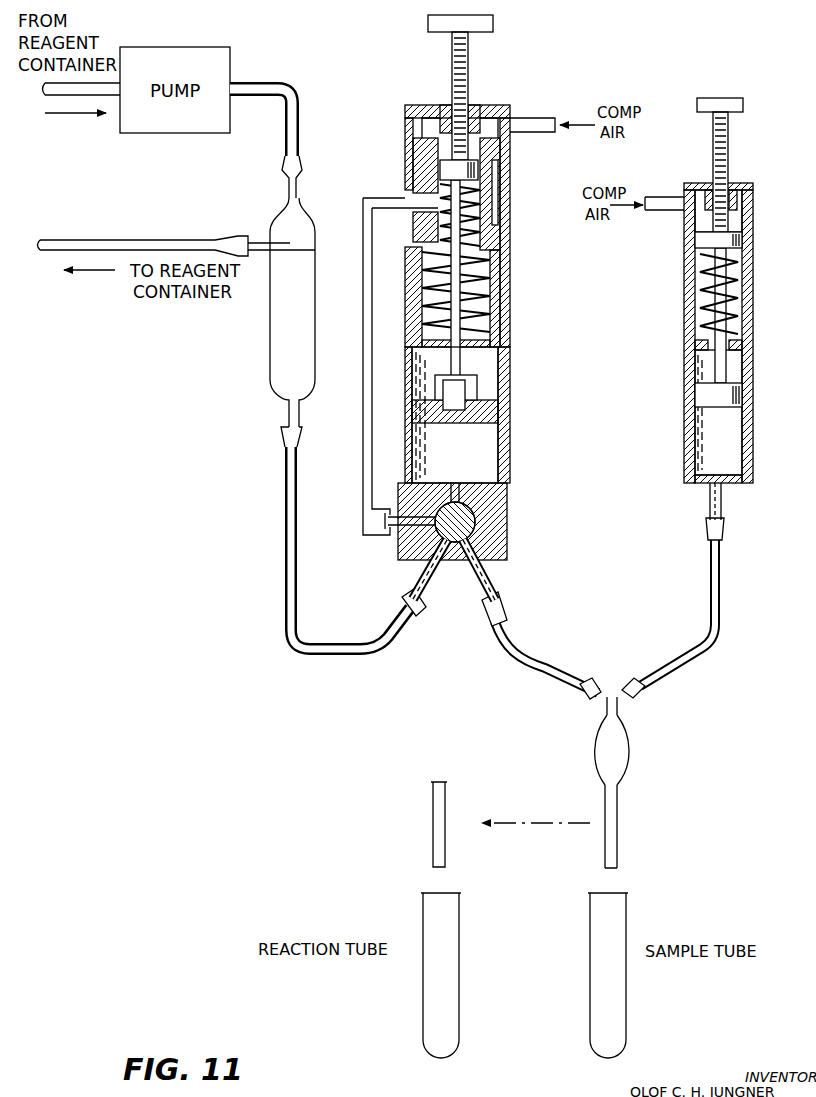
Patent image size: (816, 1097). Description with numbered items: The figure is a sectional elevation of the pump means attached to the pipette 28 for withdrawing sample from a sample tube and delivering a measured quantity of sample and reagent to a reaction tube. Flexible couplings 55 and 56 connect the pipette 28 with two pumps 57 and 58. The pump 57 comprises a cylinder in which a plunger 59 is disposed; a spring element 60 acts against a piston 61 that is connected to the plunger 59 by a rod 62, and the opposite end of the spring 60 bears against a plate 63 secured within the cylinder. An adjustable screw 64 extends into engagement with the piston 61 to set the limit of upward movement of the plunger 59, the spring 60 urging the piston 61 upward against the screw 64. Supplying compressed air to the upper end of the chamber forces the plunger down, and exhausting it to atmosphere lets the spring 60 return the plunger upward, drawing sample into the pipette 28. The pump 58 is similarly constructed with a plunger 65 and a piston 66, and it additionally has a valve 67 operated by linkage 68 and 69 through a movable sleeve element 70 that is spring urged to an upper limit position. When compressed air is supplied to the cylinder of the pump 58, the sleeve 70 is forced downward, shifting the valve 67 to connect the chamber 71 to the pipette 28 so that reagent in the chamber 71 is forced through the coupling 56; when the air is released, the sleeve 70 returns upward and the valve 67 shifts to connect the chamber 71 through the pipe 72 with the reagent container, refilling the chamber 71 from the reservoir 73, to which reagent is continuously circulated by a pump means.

The pipette 28 is at (618, 842).
The flexible coupling 55 is at (720, 640).
The flexible coupling 56 is at (540, 655).
The pump 57 is at (757, 368).
The pump 58 is at (516, 387).
The plunger 59 is at (742, 395).
The spring element 60 is at (753, 292).
The piston 61 is at (742, 240).
The rod 62 is at (740, 325).
The plate 63 is at (700, 345).
The adjustable screw 64 is at (728, 150).
The plunger 65 is at (498, 412).
The piston 66 is at (480, 172).
The valve 67 is at (475, 525).
The linkage 68 is at (388, 537).
The linkage 69 is at (366, 395).
The movable sleeve element 70 is at (418, 172).
The chamber 71 is at (485, 465).
The pipe 72 is at (340, 657).
The reservoir 73 is at (283, 353).